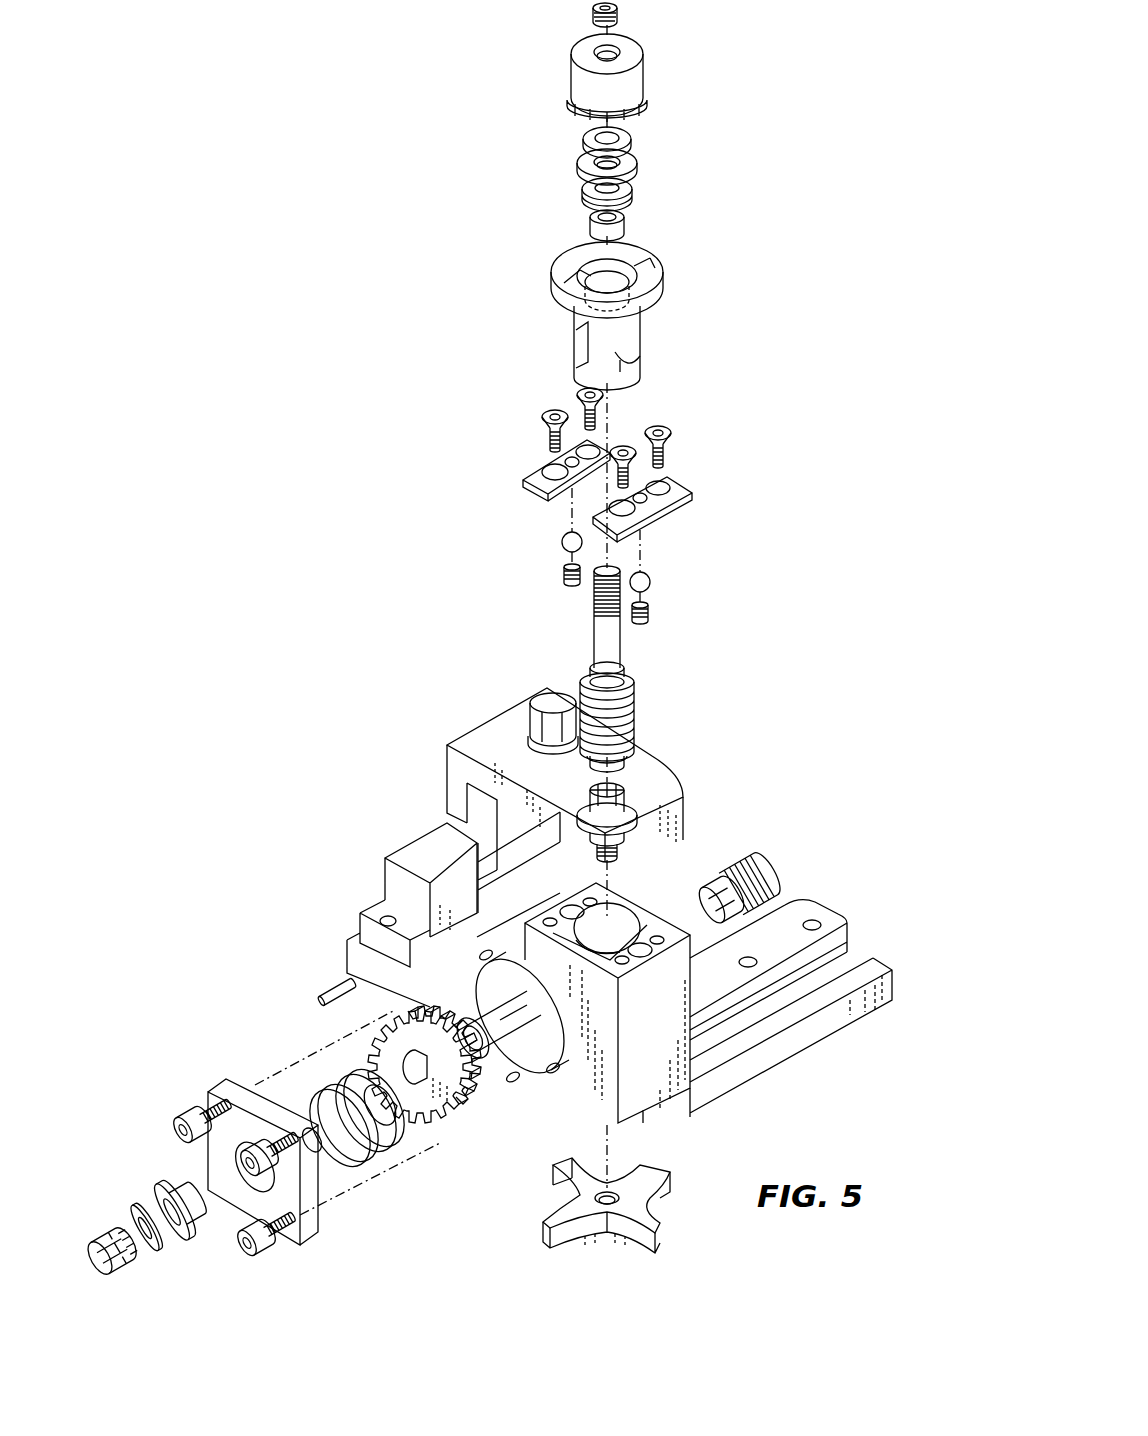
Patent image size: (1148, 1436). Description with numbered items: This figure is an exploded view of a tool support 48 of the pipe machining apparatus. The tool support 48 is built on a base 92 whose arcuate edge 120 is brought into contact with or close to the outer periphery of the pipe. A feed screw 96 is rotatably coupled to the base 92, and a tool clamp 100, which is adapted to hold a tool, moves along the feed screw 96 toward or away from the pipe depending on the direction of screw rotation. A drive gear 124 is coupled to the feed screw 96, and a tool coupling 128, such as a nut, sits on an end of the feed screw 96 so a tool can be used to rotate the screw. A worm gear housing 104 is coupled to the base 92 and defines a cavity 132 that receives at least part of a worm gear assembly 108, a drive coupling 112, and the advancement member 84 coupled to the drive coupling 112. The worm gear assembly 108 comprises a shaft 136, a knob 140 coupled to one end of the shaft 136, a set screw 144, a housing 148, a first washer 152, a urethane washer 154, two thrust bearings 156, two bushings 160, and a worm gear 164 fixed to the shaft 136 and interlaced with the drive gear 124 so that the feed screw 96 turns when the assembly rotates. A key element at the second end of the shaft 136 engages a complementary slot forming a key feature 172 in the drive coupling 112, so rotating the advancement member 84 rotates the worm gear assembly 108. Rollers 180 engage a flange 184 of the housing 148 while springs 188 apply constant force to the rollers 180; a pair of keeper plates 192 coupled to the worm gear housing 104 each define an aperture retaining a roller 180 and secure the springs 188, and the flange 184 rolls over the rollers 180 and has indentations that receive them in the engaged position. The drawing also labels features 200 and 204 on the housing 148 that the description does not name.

The tool support 48 is at (330, 270).
The advancement member 84 is at (552, 1208).
The base 92 is at (880, 952).
The feed screw 96 is at (768, 882).
The tool clamp 100 is at (463, 760).
The worm gear housing 104 is at (673, 1003).
The worm gear assembly 108 is at (799, 217).
The drive coupling 112 is at (662, 782).
The arcuate edge 120 is at (740, 906).
The drive gear 124 is at (430, 1123).
The tool coupling 128 is at (102, 1228).
The cavity 132 is at (622, 927).
The shaft 136 is at (597, 620).
The knob 140 is at (637, 77).
The set screw 144 is at (620, 12).
The housing 148 is at (614, 309).
The first washer 152 is at (632, 136).
The urethane washer 154 is at (577, 163).
The thrust bearing 156 is at (632, 197).
The bushing 160 is at (588, 218).
The worm gear 164 is at (643, 702).
The key feature 172 is at (620, 787).
The roller 180 is at (562, 538).
The flange 184 is at (557, 307).
The spring 188 is at (564, 573).
The keeper plate 192 is at (530, 475).
The slot 200 is at (636, 368).
The notch 204 is at (580, 292).